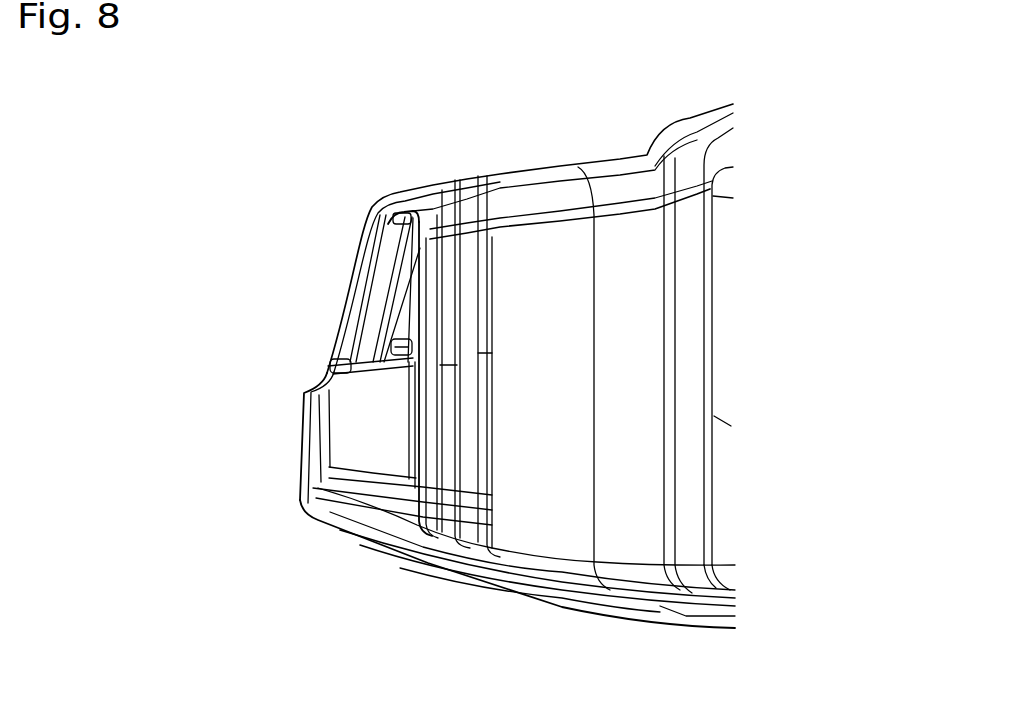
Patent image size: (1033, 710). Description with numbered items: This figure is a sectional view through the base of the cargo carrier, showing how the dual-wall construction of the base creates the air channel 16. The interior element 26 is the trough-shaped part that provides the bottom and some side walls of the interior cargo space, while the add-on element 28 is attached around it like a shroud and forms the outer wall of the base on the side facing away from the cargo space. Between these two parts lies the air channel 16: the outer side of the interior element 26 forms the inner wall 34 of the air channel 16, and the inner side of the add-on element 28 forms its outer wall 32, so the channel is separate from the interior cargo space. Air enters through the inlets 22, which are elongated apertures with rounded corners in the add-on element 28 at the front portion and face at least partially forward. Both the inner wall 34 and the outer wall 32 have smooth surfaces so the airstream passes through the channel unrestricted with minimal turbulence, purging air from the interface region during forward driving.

The air channel 16 is at (383, 428).
The inlets 22 is at (400, 342).
The interior element 26 is at (479, 207).
The add-on element 28 is at (350, 522).
The outer wall 32 is at (313, 408).
The inner wall 34 is at (437, 328).